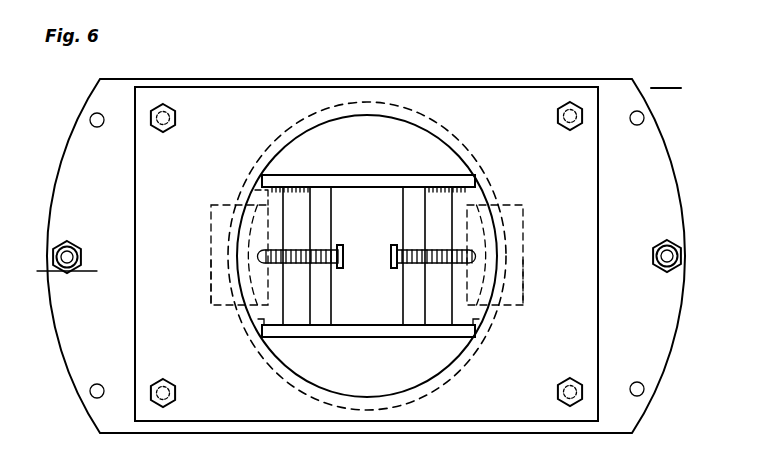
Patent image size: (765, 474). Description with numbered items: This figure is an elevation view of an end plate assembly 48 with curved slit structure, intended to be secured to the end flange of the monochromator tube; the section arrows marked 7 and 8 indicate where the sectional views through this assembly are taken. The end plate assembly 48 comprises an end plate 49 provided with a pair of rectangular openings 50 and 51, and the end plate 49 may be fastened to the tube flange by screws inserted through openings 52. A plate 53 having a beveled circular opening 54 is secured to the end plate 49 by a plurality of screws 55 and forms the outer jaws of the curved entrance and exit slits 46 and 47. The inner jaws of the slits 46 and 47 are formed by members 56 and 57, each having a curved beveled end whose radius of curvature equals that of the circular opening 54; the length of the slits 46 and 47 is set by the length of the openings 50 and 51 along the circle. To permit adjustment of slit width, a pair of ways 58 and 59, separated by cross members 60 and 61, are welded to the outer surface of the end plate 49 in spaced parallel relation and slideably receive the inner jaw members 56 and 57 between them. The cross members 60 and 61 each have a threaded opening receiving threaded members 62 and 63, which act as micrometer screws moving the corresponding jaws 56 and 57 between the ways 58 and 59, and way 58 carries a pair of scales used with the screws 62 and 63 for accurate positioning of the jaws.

The section line 7- 7 is at (2, 257).
The section line 8- 8 is at (366, 44).
The entrance slit 46 is at (505, 248).
The exit slit 47 is at (235, 233).
The end plate assembly 48 is at (666, 78).
The end plate 49 is at (408, 82).
The opening 50 is at (507, 298).
The opening 51 is at (213, 284).
The openings 52 is at (90, 119).
The plate 53 is at (595, 245).
The beveled circular opening 54 is at (436, 143).
The screws 55 is at (176, 120).
The inner jaw member 56 is at (464, 200).
The inner jaw member 57 is at (277, 200).
The way 58 is at (397, 177).
The way 59 is at (395, 331).
The cross member 60 is at (410, 298).
The cross member 61 is at (328, 307).
The threaded member 62 is at (393, 245).
The threaded member 63 is at (340, 252).